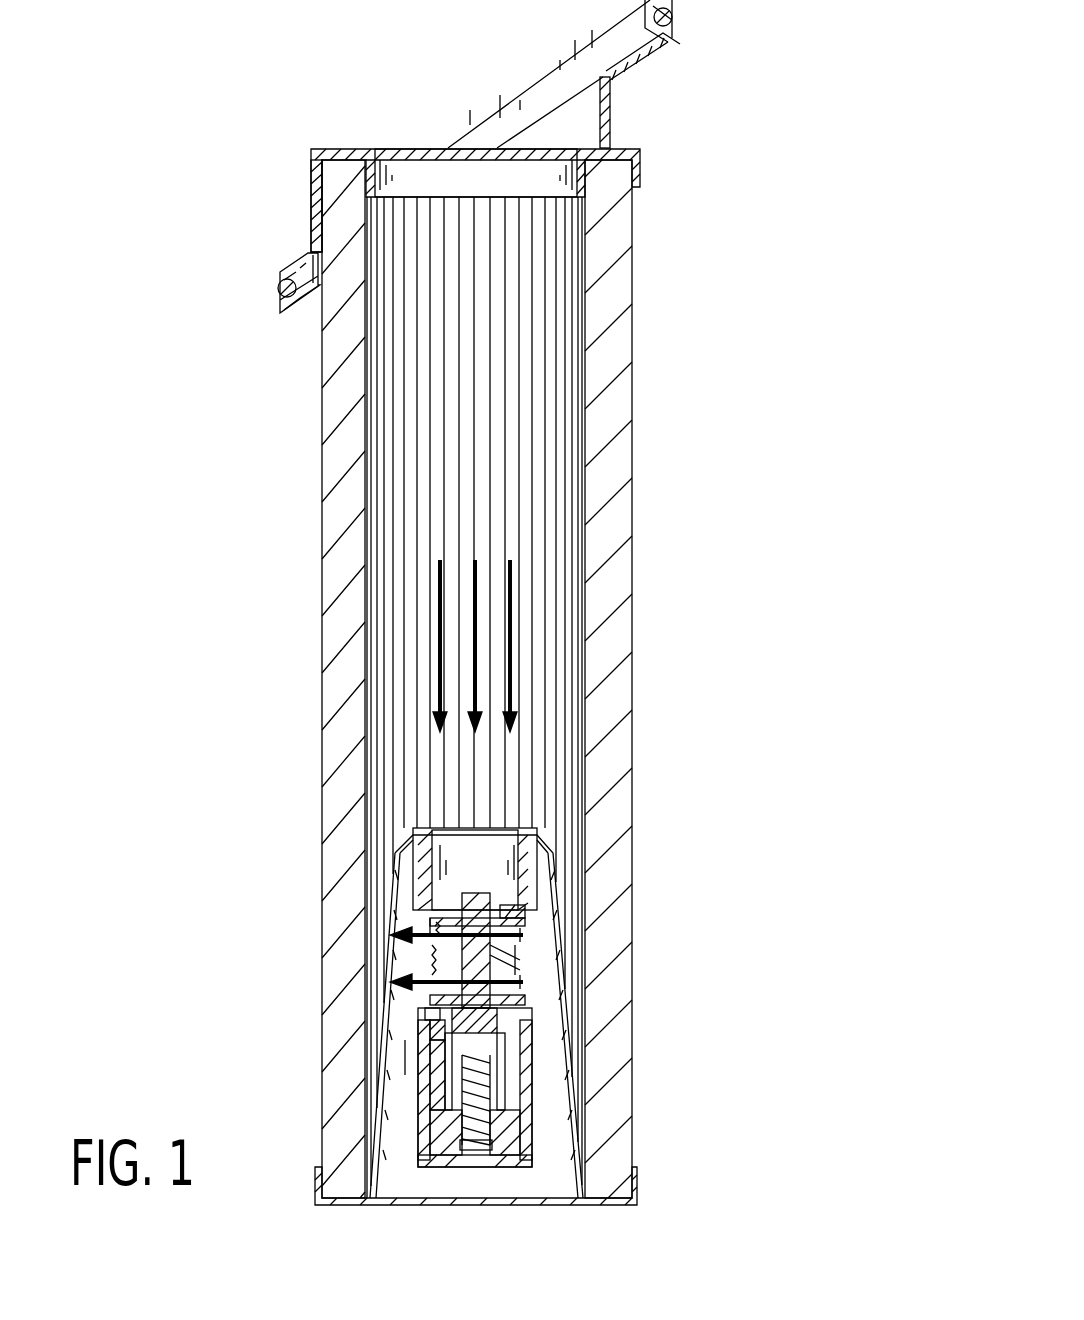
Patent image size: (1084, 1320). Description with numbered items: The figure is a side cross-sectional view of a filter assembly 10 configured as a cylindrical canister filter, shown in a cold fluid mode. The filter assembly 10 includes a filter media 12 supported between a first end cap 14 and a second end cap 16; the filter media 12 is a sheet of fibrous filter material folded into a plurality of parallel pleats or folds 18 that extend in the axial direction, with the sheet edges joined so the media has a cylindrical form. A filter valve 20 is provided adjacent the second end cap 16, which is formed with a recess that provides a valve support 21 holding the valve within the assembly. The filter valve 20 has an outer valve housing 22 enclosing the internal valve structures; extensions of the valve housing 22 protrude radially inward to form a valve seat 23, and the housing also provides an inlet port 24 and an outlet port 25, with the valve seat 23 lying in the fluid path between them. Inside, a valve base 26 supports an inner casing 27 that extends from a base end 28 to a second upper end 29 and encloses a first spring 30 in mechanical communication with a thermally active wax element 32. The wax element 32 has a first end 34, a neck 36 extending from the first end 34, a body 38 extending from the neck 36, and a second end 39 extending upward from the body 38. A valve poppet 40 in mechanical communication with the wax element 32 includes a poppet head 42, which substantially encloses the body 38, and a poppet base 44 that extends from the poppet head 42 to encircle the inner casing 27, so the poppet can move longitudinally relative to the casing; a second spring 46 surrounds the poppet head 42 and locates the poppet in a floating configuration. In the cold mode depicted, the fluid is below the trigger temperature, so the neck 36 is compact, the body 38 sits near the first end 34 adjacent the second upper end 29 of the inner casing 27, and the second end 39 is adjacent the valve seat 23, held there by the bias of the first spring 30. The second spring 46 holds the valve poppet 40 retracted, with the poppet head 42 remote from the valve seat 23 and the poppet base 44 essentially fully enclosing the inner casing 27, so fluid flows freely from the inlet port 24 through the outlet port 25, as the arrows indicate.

The filter assembly 10 is at (178, 82).
The filter media 12 is at (322, 470).
The first end cap 14 is at (318, 188).
The second end cap 16 is at (340, 1205).
The pleats or folds 18 is at (555, 400).
The filter valve 20 is at (420, 1060).
The valve support 21 is at (418, 1022).
The valve housing 22 is at (525, 1062).
The valve seat 23 is at (430, 920).
The inlet port 24 is at (500, 828).
The outlet port 25 is at (425, 948).
The valve base 26 is at (522, 1145).
The inner casing 27 is at (500, 1090).
The base end 28 is at (450, 1162).
The second upper end 29 is at (510, 1005).
The first spring 30 is at (480, 1148).
The thermally active wax element 32 is at (520, 930).
The first end 34 is at (505, 1035).
The neck 36 is at (402, 1052).
The body 38 is at (505, 985).
The second end 39 is at (530, 905).
The valve poppet 40 is at (428, 1012).
The poppet head 42 is at (425, 976).
The poppet base 44 is at (440, 1100).
The second spring 46 is at (452, 918).